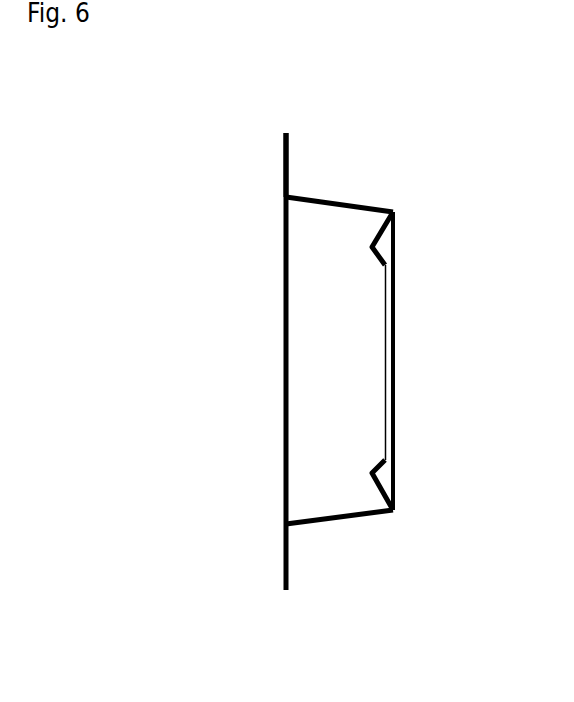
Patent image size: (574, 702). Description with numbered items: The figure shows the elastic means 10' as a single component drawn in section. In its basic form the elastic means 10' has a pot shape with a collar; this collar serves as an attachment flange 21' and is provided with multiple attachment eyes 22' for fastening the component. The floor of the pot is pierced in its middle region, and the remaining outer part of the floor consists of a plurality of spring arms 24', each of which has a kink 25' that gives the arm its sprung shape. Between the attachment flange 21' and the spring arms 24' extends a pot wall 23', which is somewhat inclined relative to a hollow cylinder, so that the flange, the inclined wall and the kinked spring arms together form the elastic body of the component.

The elastic means 10' is at (345, 307).
The attachment flange 21' is at (244, 145).
The attachment eyes 22' is at (237, 341).
The pot wall 23' is at (339, 551).
The spring arms 24' is at (434, 361).
The kink 25' is at (349, 361).